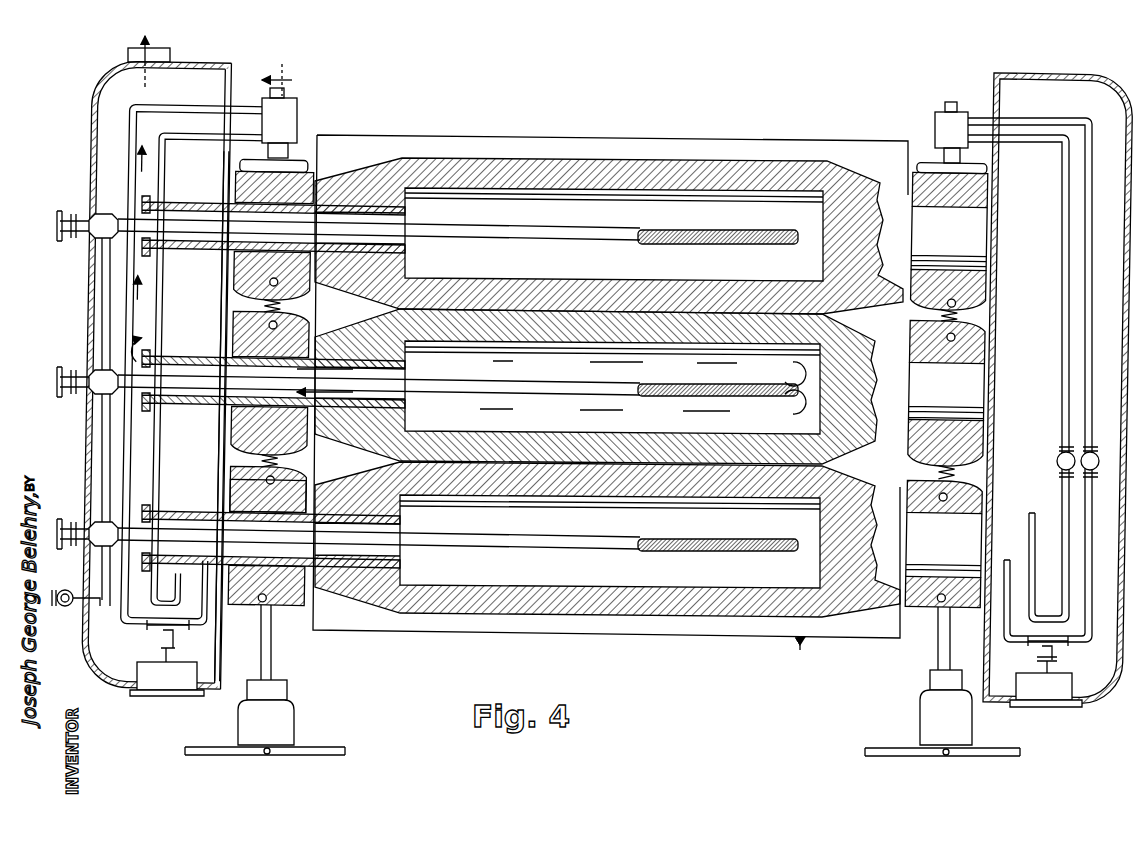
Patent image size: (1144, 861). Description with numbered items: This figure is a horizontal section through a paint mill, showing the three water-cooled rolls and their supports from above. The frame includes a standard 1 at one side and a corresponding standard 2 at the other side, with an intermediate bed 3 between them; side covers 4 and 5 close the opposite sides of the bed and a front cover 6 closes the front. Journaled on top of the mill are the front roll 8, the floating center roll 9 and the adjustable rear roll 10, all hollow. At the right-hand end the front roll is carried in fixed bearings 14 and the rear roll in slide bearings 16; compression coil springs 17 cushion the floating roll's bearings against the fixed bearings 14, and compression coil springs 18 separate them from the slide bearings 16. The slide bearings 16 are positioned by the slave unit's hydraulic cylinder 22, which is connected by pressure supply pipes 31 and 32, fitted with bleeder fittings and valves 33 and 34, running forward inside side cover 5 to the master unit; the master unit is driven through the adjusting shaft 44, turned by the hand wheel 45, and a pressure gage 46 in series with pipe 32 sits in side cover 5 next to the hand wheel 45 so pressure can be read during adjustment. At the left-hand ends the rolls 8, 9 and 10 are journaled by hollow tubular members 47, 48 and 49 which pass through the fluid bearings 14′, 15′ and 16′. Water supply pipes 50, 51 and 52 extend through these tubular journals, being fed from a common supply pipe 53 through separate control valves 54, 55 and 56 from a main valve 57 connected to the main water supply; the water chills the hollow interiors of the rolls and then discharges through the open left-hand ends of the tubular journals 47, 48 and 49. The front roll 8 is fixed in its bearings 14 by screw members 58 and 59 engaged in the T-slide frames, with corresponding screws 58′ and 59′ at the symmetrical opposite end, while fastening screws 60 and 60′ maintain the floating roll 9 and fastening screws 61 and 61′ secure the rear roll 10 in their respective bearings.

The standard 1 is at (300, 165).
The standard 2 is at (908, 168).
The intermediate bed 3 is at (672, 150).
The side cover 4 is at (108, 118).
The side cover 5 is at (1128, 78).
The front cover 6 is at (810, 663).
The front roll 8 is at (528, 612).
The floating center roll 9 is at (522, 436).
The adjustable rear roll 10 is at (548, 158).
The fixed bearing 14 is at (960, 512).
The fluid bearing 14′ is at (244, 496).
The fluid bearing 15′ is at (244, 334).
The slide bearing 16 is at (983, 196).
The fluid bearing 16′ is at (240, 190).
The compression coil spring 17 is at (990, 462).
The compression coil spring 18 is at (998, 316).
The hydraulic cylinder 22 is at (936, 124).
The pressure supply pipe 31 is at (1000, 152).
The pressure supply pipe 32 is at (980, 110).
The bleeder fitting and valve 33 is at (1057, 457).
The bleeder fitting and valve 34 is at (1083, 469).
The adjusting shaft 44 is at (940, 643).
The hand wheel 45 is at (285, 745).
The pressure gage 46 is at (162, 690).
The hollow tubular member 47 is at (404, 574).
The hollow tubular member 48 is at (410, 400).
The hollow tubular member 49 is at (408, 260).
The water supply pipe 50 is at (625, 530).
The water supply pipe 51 is at (636, 390).
The water supply pipe 52 is at (720, 230).
The common supply pipe 53 is at (102, 300).
The control valve 54 is at (68, 522).
The control valve 55 is at (60, 383).
The control valve 56 is at (64, 238).
The main valve 57 is at (64, 610).
The screw member 58 is at (940, 606).
The screw 58′ is at (263, 604).
The screw member 59 is at (938, 472).
The spring 59′ is at (292, 476).
The fastening screw 60 is at (954, 340).
The screw block 60′ is at (298, 322).
The fastening screw 61 is at (938, 314).
The screw 61′ is at (268, 282).